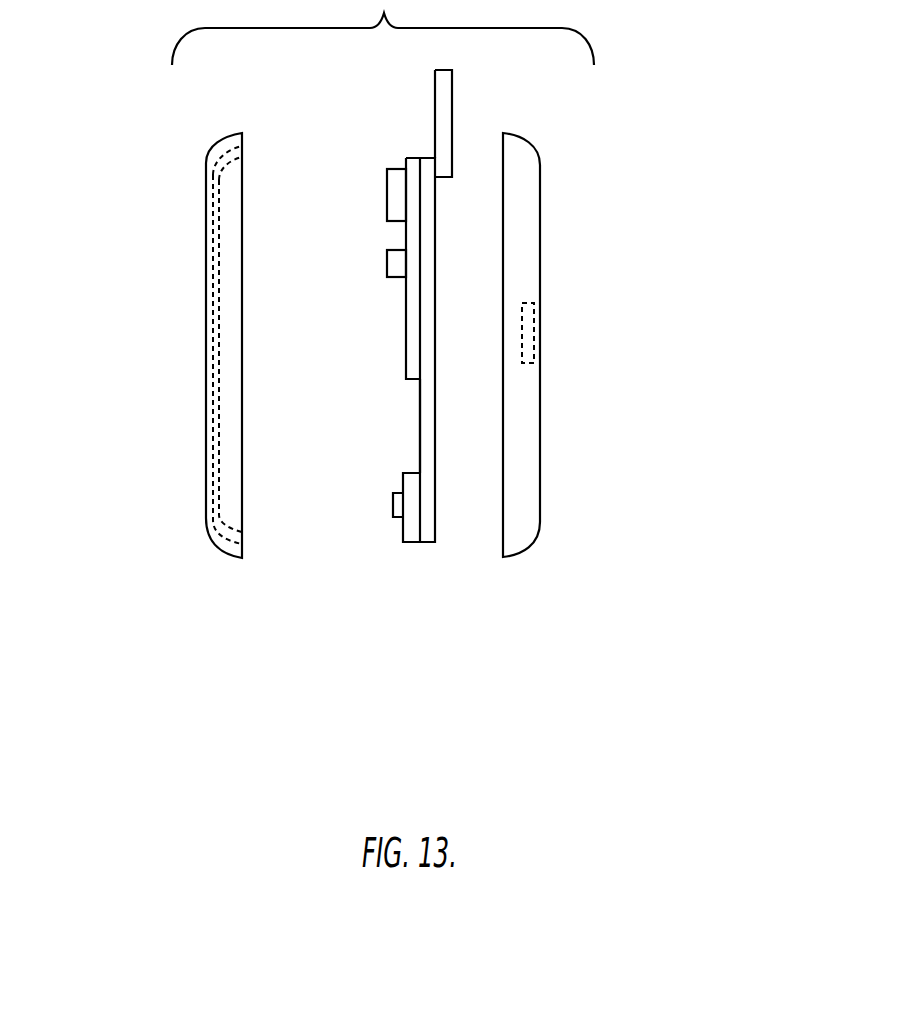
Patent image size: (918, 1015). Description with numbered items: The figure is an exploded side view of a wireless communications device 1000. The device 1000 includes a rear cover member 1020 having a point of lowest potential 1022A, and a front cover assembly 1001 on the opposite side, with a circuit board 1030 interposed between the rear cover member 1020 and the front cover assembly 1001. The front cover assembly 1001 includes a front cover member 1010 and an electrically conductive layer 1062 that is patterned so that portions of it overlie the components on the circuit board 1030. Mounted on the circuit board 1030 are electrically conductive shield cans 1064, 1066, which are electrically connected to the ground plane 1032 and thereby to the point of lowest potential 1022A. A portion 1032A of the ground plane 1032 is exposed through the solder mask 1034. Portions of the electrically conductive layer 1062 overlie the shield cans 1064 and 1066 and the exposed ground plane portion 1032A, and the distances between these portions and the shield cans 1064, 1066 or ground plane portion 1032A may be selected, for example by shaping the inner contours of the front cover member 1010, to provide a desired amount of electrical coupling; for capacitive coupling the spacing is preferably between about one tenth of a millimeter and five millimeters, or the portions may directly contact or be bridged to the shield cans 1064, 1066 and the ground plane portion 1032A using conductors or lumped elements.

The wireless communications device 1000 is at (644, 178).
The front cover assembly 1001 is at (186, 567).
The front cover member 1010 is at (206, 311).
The electrically conductive layer 1062 is at (220, 338).
The rear cover member 1020 is at (530, 492).
The point of lowest potential 1022A is at (535, 330).
The circuit board 1030 is at (427, 560).
The ground plane 1032 is at (400, 518).
The portion of the ground plane 1032A is at (420, 433).
The solder mask 1034 is at (412, 350).
The shield can 1064 is at (393, 191).
The shield can 1066 is at (393, 262).